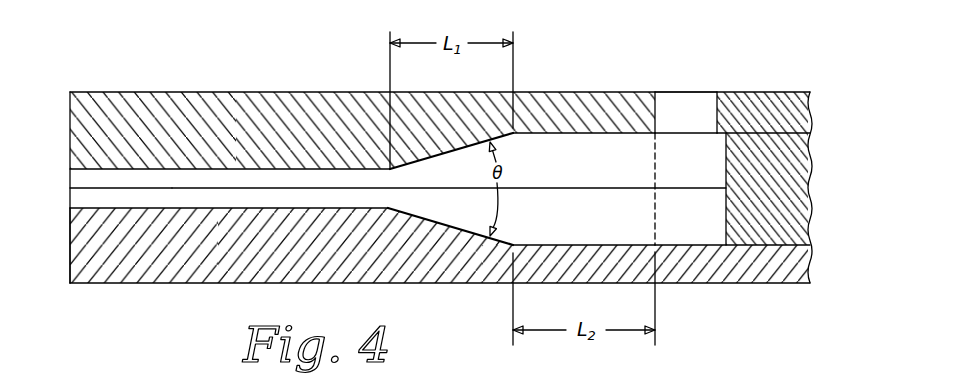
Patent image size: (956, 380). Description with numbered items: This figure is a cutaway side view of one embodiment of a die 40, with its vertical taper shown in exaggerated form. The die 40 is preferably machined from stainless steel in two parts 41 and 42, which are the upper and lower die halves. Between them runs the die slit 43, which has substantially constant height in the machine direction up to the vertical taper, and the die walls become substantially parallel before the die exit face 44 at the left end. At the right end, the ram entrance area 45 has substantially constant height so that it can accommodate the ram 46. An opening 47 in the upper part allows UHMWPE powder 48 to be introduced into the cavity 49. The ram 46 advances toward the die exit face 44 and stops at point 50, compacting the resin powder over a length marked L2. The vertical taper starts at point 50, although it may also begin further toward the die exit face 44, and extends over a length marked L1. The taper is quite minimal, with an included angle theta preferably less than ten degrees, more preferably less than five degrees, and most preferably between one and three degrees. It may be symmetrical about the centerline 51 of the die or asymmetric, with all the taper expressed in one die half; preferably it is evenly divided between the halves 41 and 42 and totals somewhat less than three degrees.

The die 40 is at (277, 67).
The die part 41 is at (131, 113).
The die part 42 is at (107, 268).
The die slit 43 is at (172, 188).
The die exit face 44 is at (70, 243).
The ram entrance area 45 is at (612, 165).
The ram 46 is at (752, 238).
The opening 47 is at (672, 103).
The UHMWPE powder 48 is at (690, 85).
The cavity 49 is at (662, 208).
The point 50 is at (513, 304).
The centerline 51 is at (70, 187).